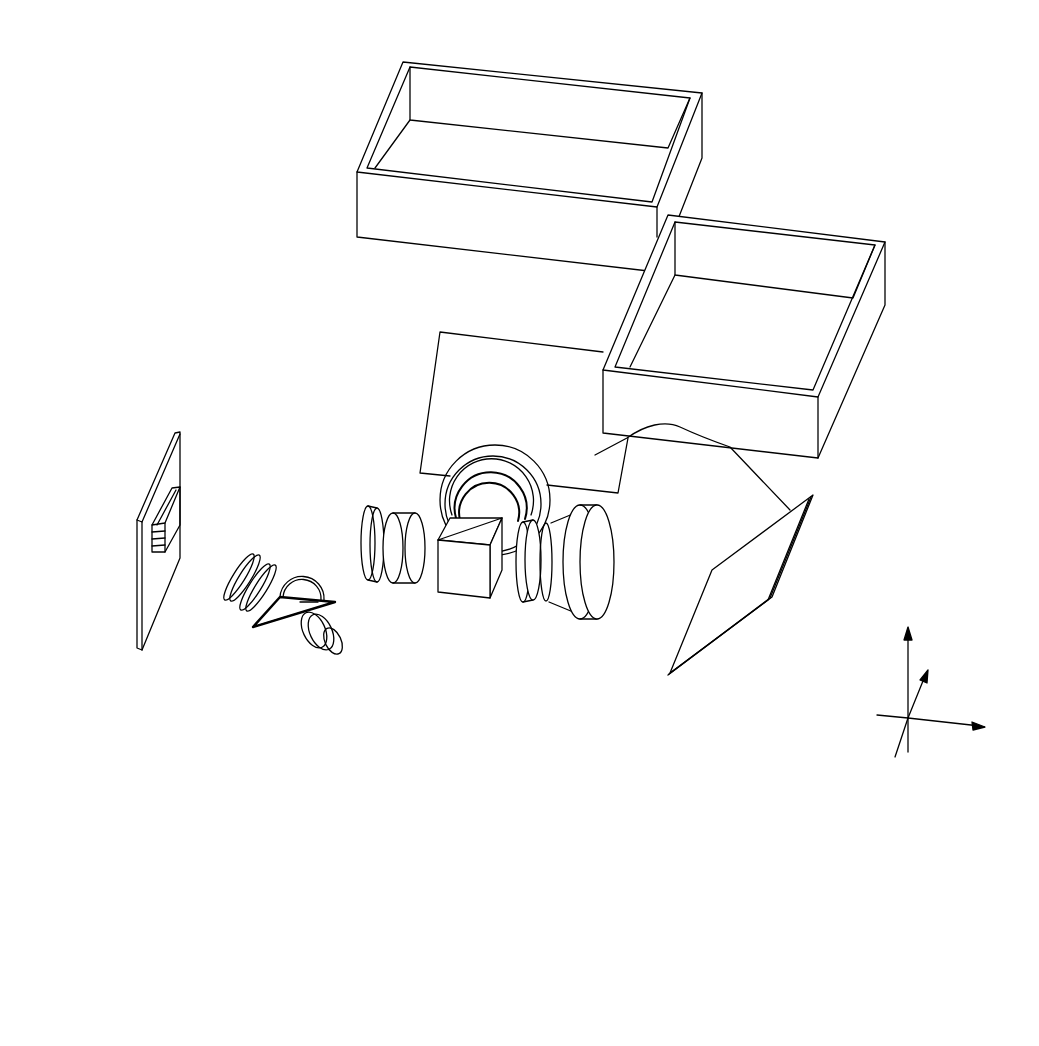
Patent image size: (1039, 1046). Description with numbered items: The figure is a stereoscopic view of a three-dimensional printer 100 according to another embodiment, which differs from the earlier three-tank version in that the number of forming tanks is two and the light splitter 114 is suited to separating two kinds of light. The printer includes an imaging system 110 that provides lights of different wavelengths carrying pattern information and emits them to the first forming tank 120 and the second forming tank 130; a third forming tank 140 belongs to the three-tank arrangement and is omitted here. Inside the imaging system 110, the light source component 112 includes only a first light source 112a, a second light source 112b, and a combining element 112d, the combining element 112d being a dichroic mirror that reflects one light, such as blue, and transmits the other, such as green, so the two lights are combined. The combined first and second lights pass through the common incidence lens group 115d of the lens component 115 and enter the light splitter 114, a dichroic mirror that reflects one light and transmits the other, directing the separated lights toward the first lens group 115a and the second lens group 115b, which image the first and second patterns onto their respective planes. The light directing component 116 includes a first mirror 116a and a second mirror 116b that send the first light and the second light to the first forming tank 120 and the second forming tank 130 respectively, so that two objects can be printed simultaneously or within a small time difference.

The three-dimensional printer 100 is at (130, 65).
The imaging system 110 is at (268, 391).
The light source component 112 is at (383, 622).
The first light source 112a is at (327, 593).
The second light source 112b is at (343, 642).
The combining element 112d is at (330, 612).
The light splitter 114 is at (448, 492).
The lens component 115 is at (560, 542).
The first lens group 115a is at (548, 473).
The second lens group 115b is at (586, 510).
The common incidence lens group 115d is at (398, 556).
The light directing component 116 is at (822, 578).
The first mirror 116a is at (810, 510).
The second mirror 116b is at (780, 543).
The first forming tank 120 is at (365, 202).
The second forming tank 130 is at (172, 518).
The third forming tank 140 is at (842, 373).